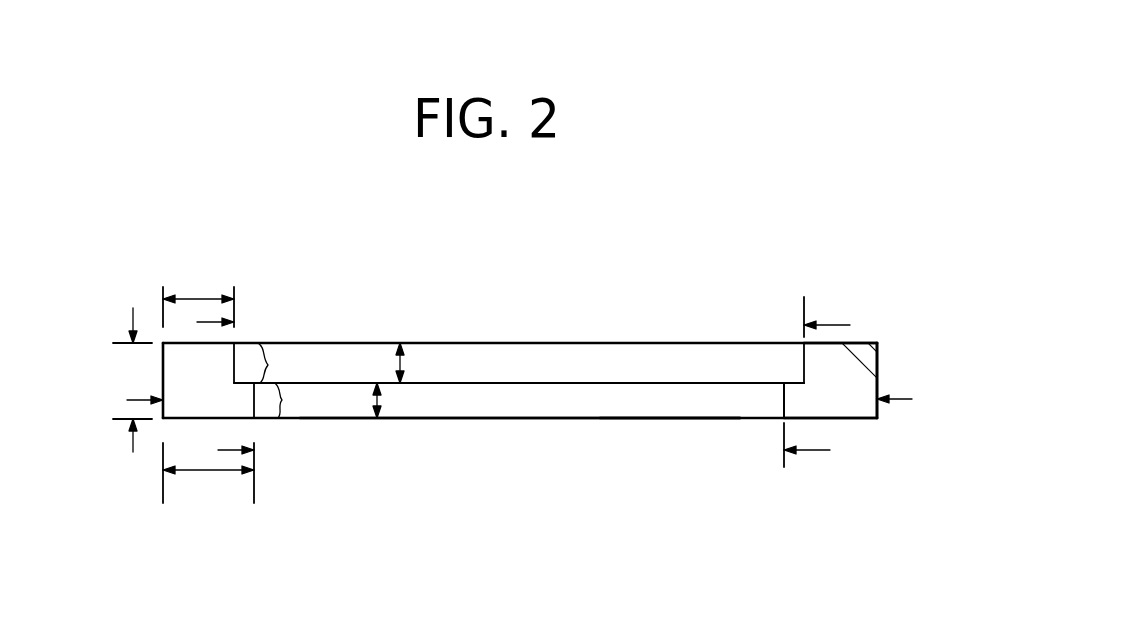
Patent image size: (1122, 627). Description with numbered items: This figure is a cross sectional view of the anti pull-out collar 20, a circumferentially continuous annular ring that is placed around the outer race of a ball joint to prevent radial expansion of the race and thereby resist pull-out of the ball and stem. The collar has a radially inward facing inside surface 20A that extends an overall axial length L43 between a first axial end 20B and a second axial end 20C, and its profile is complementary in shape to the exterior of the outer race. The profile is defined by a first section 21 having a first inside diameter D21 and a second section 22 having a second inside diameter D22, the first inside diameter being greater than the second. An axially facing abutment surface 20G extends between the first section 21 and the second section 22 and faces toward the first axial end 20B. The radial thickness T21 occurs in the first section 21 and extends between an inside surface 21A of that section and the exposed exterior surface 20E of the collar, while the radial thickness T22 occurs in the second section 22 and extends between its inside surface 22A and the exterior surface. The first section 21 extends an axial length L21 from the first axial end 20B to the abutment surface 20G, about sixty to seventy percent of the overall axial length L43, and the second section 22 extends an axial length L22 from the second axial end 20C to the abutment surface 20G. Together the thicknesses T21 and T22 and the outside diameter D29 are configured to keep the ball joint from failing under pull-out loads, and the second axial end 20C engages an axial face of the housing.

The anti pull-out collar 20 is at (858, 282).
The radially inward facing inside surface 20A is at (685, 372).
The first axial end 20B is at (862, 343).
The second axial end 20C is at (853, 420).
The exterior surface 20E is at (878, 369).
The axially facing abutment surface 20G is at (793, 383).
The first section 21 is at (268, 365).
The inside surface of the first section 21A is at (494, 364).
The second section 22 is at (282, 400).
The inside surface of the second section 22A is at (487, 403).
The axial length of the first section L21 is at (410, 350).
The axial length of the second section L22 is at (380, 395).
The overall axial length L43 is at (133, 308).
The radial thickness of the first section T21 is at (197, 300).
The radial thickness of the second section T22 is at (210, 470).
The first inside diameter D21 is at (833, 323).
The second inside diameter D22 is at (820, 452).
The outside diameter D29 is at (912, 400).